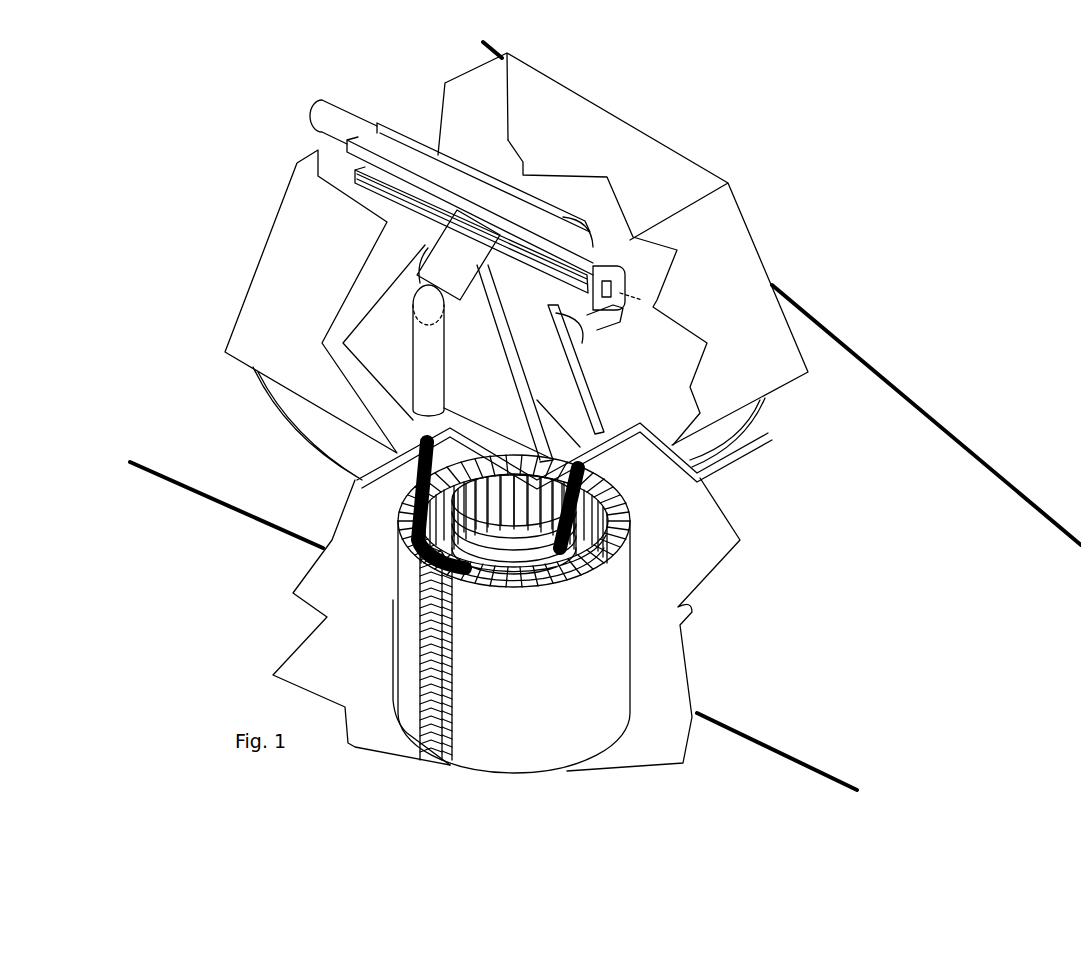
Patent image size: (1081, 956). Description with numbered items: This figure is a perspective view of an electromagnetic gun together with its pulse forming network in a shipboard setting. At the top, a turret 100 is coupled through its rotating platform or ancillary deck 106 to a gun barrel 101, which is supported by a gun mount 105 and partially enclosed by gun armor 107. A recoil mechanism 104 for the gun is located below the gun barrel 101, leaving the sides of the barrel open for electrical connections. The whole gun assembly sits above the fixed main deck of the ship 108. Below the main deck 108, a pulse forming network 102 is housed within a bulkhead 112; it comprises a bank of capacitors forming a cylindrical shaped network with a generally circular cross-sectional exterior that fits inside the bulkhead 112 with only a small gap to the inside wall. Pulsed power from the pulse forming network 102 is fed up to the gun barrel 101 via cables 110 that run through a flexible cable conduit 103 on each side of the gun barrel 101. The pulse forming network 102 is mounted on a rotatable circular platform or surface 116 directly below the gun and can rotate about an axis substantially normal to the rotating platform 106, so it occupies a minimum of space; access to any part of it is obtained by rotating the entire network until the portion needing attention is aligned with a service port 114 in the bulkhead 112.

The turret 100 is at (563, 150).
The gun barrel 101 is at (325, 113).
The pulse forming network 102 is at (605, 537).
The flexible cable conduit 103 is at (484, 256).
The recoil mechanism 104 is at (392, 200).
The gun mount 105 is at (488, 389).
The rotating platform 106 is at (312, 418).
The gun armor 107 is at (717, 233).
The fixed main deck 108 is at (870, 407).
The cables 110 is at (595, 460).
The bulkhead 112 is at (603, 633).
The service port 114 is at (458, 622).
The rotatable circular platform 116 is at (407, 733).